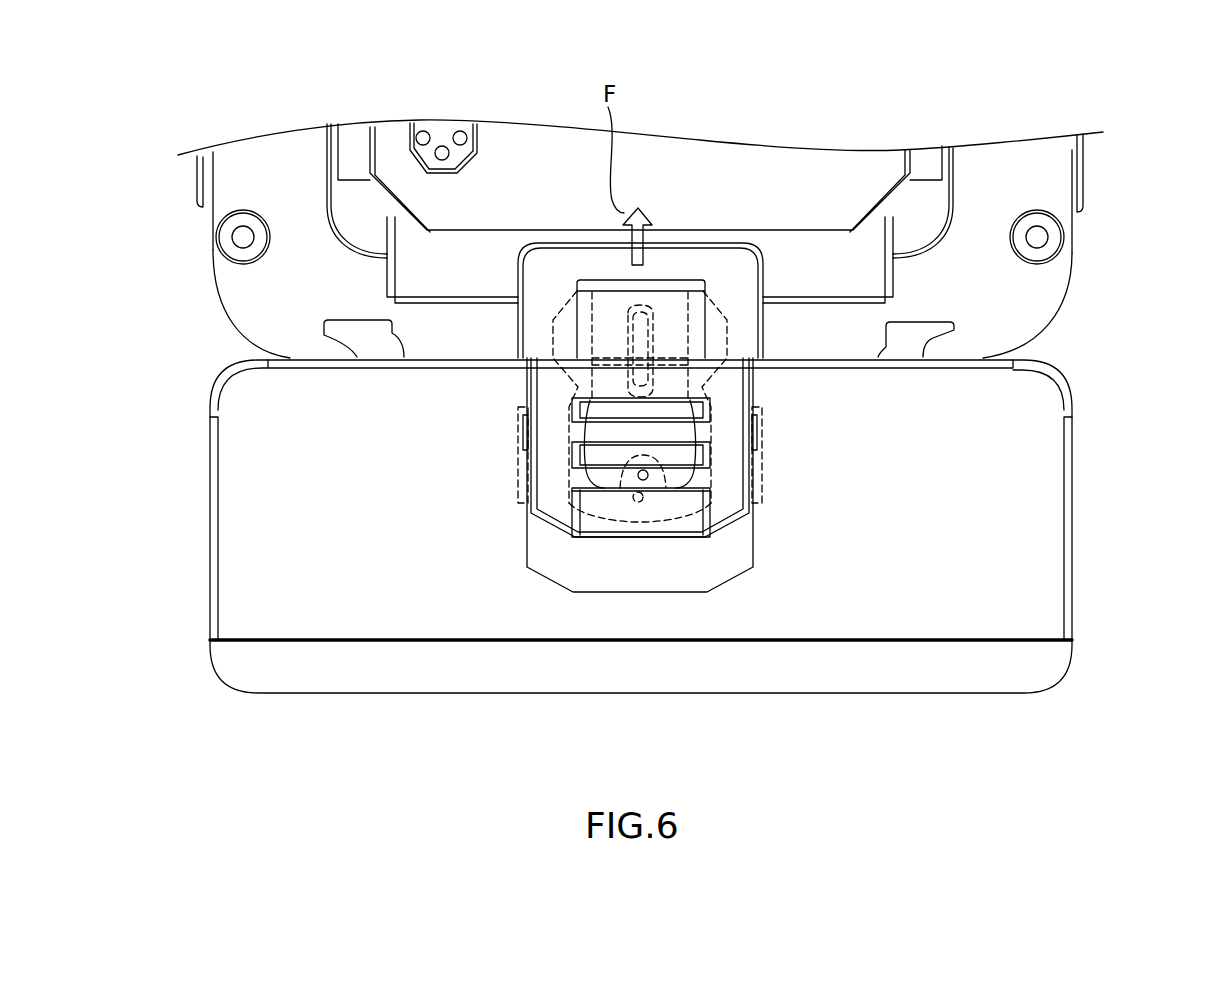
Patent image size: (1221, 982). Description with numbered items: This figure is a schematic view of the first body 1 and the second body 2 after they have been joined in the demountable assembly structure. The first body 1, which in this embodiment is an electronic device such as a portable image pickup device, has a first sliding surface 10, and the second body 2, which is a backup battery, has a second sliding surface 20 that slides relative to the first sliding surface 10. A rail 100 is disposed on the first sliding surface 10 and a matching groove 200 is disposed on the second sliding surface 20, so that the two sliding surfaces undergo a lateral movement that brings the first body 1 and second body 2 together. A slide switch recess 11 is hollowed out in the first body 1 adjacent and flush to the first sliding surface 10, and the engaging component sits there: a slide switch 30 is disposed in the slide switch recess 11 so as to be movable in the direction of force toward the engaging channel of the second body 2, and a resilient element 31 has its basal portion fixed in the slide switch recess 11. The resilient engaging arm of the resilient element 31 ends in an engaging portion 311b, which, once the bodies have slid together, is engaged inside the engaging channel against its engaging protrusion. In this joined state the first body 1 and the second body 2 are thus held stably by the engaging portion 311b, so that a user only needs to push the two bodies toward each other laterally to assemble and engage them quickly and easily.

The first body 1 is at (1075, 510).
The second body 2 is at (1088, 170).
The first sliding surface 10 is at (830, 357).
The second sliding surface 20 is at (850, 360).
The slide switch 30 is at (557, 507).
The resilient element 31 is at (621, 516).
The slide switch recess 11 is at (700, 565).
The rail 100 is at (370, 328).
The groove 200 is at (357, 357).
The engaging portion 311b is at (717, 320).